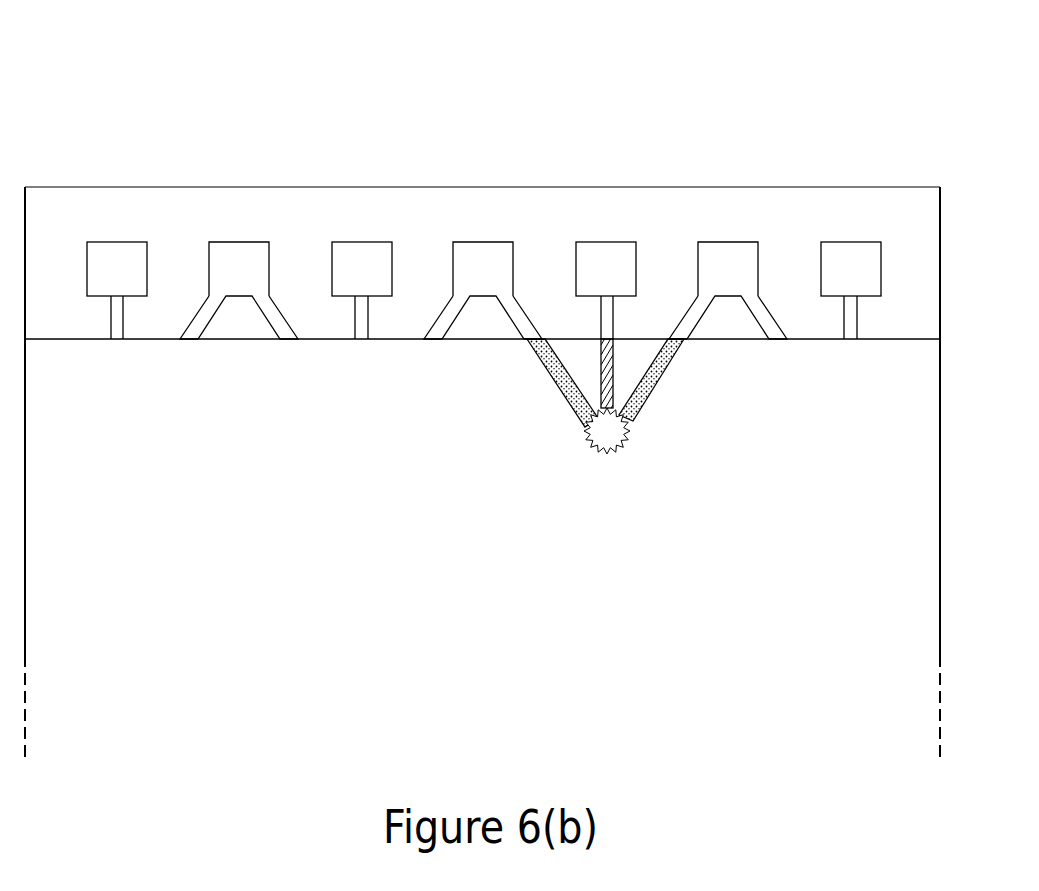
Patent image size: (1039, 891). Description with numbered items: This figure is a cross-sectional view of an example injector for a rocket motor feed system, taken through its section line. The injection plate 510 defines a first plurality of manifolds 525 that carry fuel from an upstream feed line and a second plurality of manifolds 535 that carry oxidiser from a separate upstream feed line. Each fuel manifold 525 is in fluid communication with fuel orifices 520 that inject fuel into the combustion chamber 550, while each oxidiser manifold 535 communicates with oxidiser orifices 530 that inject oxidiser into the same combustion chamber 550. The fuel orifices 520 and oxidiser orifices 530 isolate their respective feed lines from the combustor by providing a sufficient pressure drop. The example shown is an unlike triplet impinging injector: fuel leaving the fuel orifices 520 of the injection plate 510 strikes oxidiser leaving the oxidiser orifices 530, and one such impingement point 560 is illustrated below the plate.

The injection plate 510 is at (788, 215).
The fuel orifices 520 is at (358, 348).
The first plurality of manifolds 525 is at (368, 263).
The oxidiser orifices 530 is at (425, 347).
The second plurality of manifolds 535 is at (727, 268).
The combustion chamber 550 is at (512, 639).
The impingement point 560 is at (607, 432).